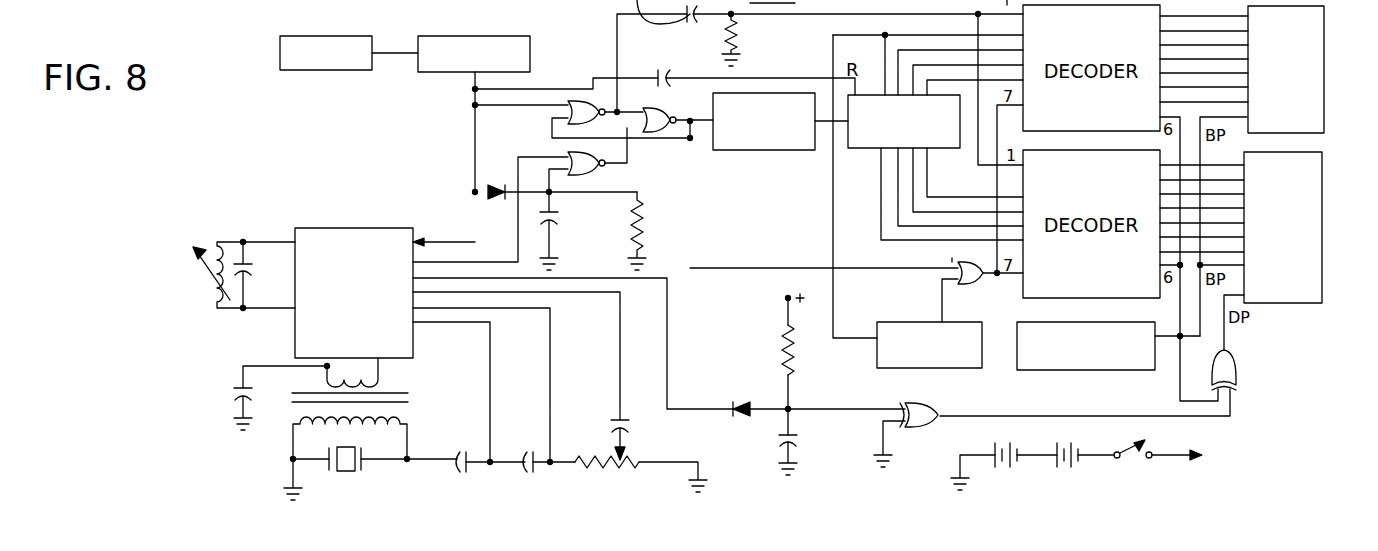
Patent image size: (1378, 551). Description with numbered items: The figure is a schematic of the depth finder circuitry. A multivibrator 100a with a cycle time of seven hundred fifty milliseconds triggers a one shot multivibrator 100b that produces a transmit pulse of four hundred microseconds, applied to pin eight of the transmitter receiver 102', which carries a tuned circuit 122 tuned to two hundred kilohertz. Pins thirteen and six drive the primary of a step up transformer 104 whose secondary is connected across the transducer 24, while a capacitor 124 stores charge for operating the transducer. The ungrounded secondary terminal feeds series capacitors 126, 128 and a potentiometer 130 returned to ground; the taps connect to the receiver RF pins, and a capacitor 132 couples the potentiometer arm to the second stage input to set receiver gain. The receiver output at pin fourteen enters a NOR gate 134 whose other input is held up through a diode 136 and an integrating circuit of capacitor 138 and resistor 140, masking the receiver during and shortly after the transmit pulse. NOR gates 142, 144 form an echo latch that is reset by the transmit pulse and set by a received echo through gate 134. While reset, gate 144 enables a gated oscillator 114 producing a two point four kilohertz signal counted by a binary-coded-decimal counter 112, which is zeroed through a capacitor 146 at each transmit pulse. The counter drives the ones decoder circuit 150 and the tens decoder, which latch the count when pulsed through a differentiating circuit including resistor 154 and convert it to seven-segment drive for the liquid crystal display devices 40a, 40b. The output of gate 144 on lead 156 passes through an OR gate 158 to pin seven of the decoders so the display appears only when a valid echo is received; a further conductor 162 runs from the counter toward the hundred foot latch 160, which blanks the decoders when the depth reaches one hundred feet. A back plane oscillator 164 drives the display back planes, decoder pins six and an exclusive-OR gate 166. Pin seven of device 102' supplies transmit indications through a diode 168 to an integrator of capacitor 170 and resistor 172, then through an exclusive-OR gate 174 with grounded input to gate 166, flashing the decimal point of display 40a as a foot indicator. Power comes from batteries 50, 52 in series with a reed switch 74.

The transducer 24 is at (350, 471).
The ones liquid crystal display device 40a is at (1322, 252).
The tens liquid crystal display device 40b is at (1324, 70).
The battery 50 is at (1070, 470).
The battery 52 is at (1006, 470).
The reed switch 74 is at (1133, 465).
The multivibrator 100a is at (330, 70).
The one shot multivibrator 100b is at (443, 72).
The transmitter receiver 102' is at (359, 270).
The step up transformer 104 is at (410, 402).
The binary-coded-decimal counter 112 is at (872, 148).
The gated oscillator 114 is at (778, 150).
The tuned circuit 122 is at (228, 242).
The capacitor 124 is at (233, 388).
The capacitor 126 is at (462, 455).
The capacitor 128 is at (532, 456).
The potentiometer 130 is at (597, 458).
The capacitor 132 is at (625, 420).
The NOR gate 134 is at (604, 173).
The diode 136 is at (490, 186).
The capacitor 138 is at (552, 222).
The resistor 140 is at (638, 200).
The NOR gate 142 is at (552, 116).
The NOR gate 144 is at (640, 108).
The capacitor 146 is at (657, 80).
The ones decoder circuit 150 is at (1015, 280).
The resistor 154 is at (738, 36).
The lead 156 is at (753, 268).
The OR gate 158 is at (952, 262).
The 100 FT. latch 160 is at (903, 322).
The conductor line 162 is at (833, 238).
The back plane oscillator 164 is at (1043, 370).
The exclusive-OR gate 166 is at (1237, 365).
The diode 168 is at (738, 402).
The capacitor 170 is at (797, 438).
The resistor 172 is at (797, 353).
The exclusive-OR gate 174 is at (937, 403).